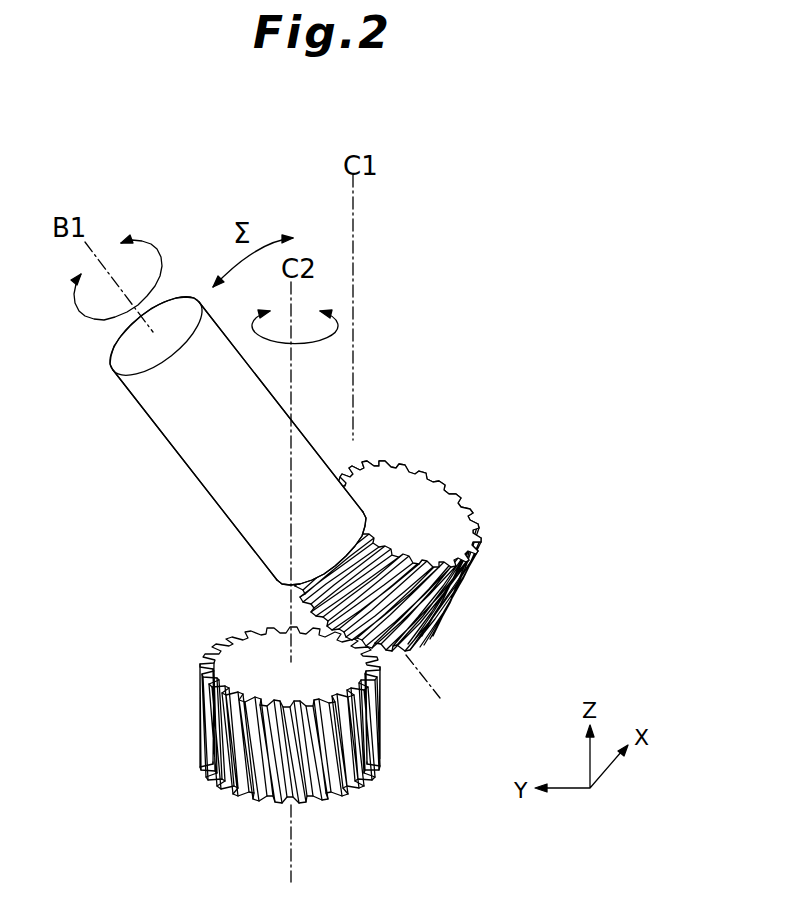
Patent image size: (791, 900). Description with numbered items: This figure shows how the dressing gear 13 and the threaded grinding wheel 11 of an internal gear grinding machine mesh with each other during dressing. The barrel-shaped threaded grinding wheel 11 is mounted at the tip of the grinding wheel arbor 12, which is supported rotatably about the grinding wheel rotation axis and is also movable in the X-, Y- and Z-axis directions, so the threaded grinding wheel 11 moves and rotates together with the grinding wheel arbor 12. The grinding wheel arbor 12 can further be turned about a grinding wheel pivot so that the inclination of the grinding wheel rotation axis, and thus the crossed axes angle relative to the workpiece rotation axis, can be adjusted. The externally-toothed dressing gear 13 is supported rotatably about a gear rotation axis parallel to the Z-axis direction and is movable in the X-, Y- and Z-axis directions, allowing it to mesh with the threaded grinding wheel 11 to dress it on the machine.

The threaded grinding wheel 11 is at (463, 513).
The grinding wheel arbor 12 is at (155, 407).
The dressing gear 13 is at (205, 720).